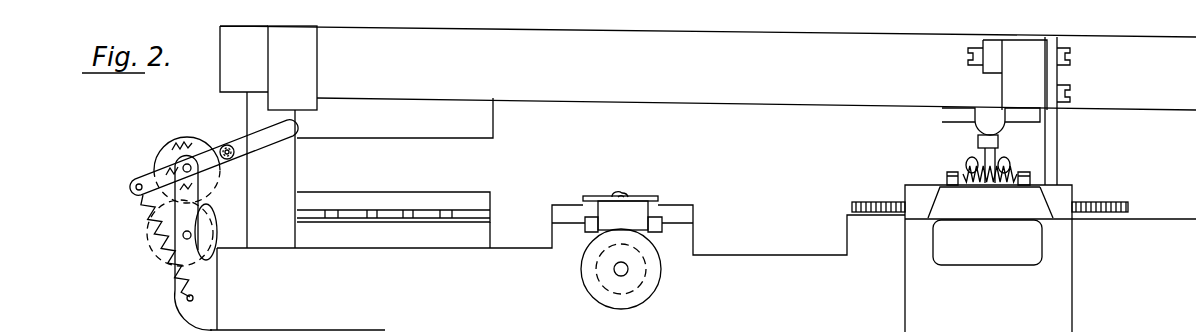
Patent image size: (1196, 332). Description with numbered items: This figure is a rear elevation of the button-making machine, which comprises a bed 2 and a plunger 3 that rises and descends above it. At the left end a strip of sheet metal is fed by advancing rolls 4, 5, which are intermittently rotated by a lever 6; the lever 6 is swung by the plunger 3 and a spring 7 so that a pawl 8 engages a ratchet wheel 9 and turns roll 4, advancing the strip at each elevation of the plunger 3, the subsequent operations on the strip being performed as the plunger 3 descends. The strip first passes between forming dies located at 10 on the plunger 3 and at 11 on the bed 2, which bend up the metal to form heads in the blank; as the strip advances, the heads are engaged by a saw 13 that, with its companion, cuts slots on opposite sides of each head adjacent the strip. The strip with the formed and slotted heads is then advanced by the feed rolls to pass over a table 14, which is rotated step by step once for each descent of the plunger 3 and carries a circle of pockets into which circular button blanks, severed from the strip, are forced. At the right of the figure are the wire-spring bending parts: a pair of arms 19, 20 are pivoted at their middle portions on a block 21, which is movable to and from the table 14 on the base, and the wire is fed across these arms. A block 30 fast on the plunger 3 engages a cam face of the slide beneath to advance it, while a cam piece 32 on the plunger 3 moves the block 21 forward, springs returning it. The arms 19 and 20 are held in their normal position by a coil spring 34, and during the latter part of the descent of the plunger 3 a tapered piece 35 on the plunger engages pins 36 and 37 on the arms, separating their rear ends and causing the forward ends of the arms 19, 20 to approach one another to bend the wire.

The bed 2 is at (852, 239).
The plunger 3 is at (727, 92).
The roll 4 is at (175, 146).
The roll 5 is at (214, 254).
The lever 6 is at (273, 140).
The spring 7 is at (152, 206).
The pawl 8 is at (215, 141).
The ratchet wheel 9 is at (168, 162).
The forming die 10 is at (493, 128).
The forming die 11 is at (500, 195).
The saw 13 is at (637, 198).
The table 14 is at (874, 203).
The arm 19 is at (963, 189).
The arm 20 is at (1006, 189).
The block 21 is at (989, 212).
The block 30 is at (983, 156).
The cam piece 32 is at (1003, 137).
The coil spring 34 is at (965, 168).
The tapered piece 35 is at (991, 121).
The pin 36 is at (1008, 159).
The pin 37 is at (970, 160).